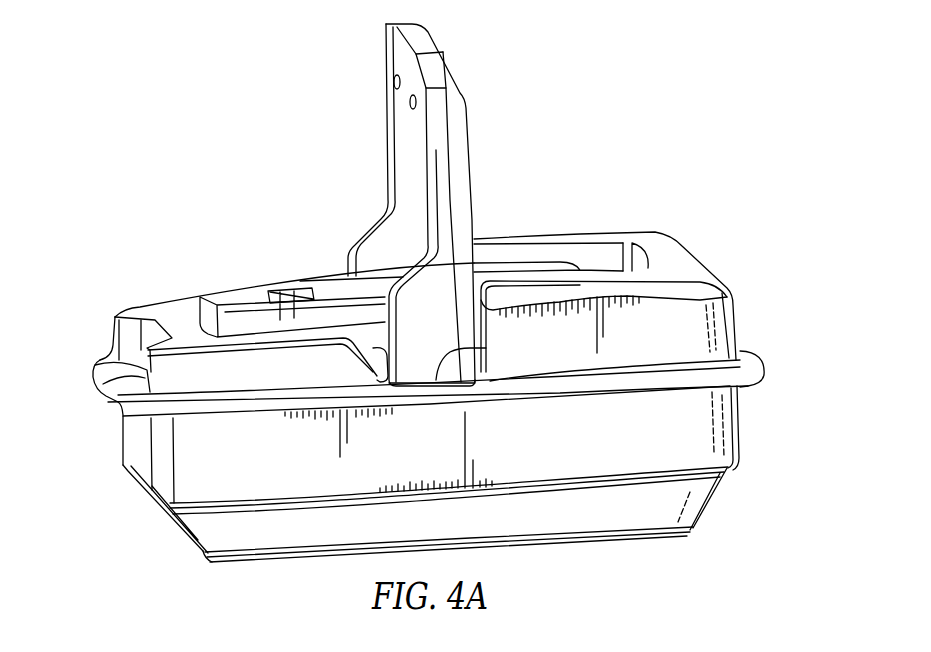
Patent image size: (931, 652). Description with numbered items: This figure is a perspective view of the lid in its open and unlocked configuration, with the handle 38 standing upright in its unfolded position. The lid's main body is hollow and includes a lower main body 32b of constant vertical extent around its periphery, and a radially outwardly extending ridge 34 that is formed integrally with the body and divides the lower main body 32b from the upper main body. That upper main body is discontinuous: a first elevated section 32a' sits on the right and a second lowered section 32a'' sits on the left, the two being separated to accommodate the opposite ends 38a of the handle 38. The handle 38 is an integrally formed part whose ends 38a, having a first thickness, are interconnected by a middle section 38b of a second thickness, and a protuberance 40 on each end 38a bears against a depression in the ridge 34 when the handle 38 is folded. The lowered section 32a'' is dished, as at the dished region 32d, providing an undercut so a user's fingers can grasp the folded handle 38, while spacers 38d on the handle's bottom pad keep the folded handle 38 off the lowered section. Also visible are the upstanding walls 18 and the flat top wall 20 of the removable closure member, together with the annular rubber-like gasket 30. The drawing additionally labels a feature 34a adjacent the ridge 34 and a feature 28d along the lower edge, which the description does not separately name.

The upstanding walls 18 is at (363, 334).
The flat top wall 20 is at (297, 276).
The base bottom edge 28d is at (693, 528).
The gasket 30 is at (717, 501).
The first elevated section 32a' is at (637, 306).
The second lowered section 32a'' is at (96, 387).
The lower main body 32b is at (157, 450).
The dished region 32d is at (133, 328).
The ridge 34 is at (755, 357).
The rim shoulder 34a is at (476, 350).
The handle 38 is at (467, 108).
The opposing ends 38a is at (445, 342).
The middle section 38b is at (393, 38).
The spacers 38d is at (392, 87).
The protuberance 40 is at (380, 373).